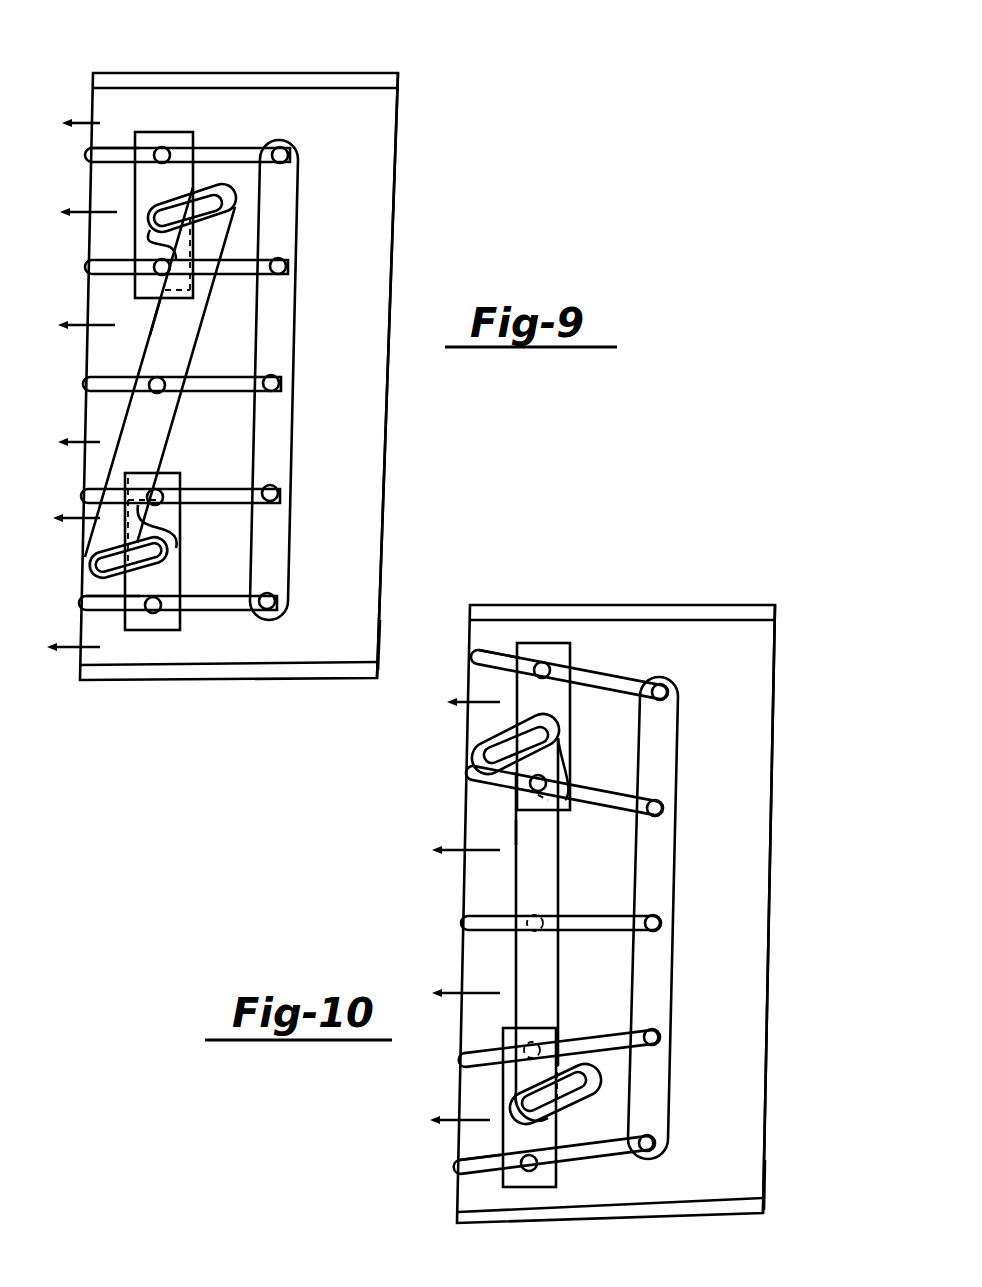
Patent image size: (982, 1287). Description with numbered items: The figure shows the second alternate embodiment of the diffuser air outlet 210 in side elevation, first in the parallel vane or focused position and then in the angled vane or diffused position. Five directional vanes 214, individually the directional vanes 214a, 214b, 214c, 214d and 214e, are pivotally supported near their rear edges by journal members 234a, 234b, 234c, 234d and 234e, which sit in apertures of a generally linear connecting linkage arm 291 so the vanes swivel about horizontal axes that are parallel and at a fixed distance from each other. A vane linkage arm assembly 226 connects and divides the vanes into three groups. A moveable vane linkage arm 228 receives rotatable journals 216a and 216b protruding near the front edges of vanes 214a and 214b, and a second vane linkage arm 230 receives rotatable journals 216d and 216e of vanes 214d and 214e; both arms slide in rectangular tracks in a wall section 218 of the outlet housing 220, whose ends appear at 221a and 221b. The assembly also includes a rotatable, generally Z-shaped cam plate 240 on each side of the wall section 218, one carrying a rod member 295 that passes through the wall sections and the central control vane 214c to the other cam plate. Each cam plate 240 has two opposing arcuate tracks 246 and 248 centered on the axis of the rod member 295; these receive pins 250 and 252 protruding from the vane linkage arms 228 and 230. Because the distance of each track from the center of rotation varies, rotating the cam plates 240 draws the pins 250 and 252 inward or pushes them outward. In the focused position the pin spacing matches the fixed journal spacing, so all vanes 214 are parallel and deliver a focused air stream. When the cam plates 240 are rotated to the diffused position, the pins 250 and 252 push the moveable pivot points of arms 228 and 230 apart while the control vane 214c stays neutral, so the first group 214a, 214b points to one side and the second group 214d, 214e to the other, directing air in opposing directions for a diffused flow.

In FIG. 9, the diffuser air outlet 210 is at (247, 363).
In FIG. 10, the diffuser air outlet 210 is at (586, 875).
In FIG. 9, the directional vanes 214 is at (193, 340).
In FIG. 10, the directional vanes 214 is at (568, 888).
In FIG. 9, the directional vane 214a is at (196, 127).
In FIG. 10, the directional vane 214a is at (576, 663).
In FIG. 9, the directional vane 214b is at (186, 296).
In FIG. 10, the directional vane 214b is at (564, 784).
In FIG. 9, the directional vane 214c is at (182, 406).
In FIG. 10, the directional vane 214c is at (560, 902).
In FIG. 9, the directional vane 214d is at (180, 517).
In FIG. 10, the directional vane 214d is at (558, 1029).
In FIG. 9, the directional vane 214e is at (178, 628).
In FIG. 10, the directional vane 214e is at (553, 1172).
In FIG. 9, the rotatable journal 216a is at (177, 128).
In FIG. 10, the rotatable journal 216a is at (567, 610).
In FIG. 9, the rotatable journal 216b is at (96, 258).
In FIG. 10, the rotatable journal 216b is at (582, 762).
In FIG. 9, the rotatable journal 216d is at (196, 469).
In FIG. 10, the rotatable journal 216d is at (573, 1014).
In FIG. 9, the rotatable journal 216e is at (154, 633).
In FIG. 10, the rotatable journal 216e is at (515, 1205).
In FIG. 9, the wall section 218 is at (422, 375).
In FIG. 10, the wall section 218 is at (776, 909).
In FIG. 9, the outlet housing 220 is at (283, 376).
In FIG. 10, the outlet housing 220 is at (642, 914).
In FIG. 9, the first plate end 221a is at (192, 685).
In FIG. 10, the first plate end 221a is at (554, 1214).
In FIG. 9, the second plate end 221b is at (419, 647).
In FIG. 10, the second plate end 221b is at (775, 1201).
In FIG. 9, the vane linkage arm assembly 226 is at (91, 330).
In FIG. 10, the vane linkage arm assembly 226 is at (465, 823).
In FIG. 9, the vane linkage arm 228 is at (82, 168).
In FIG. 10, the vane linkage arm 228 is at (504, 626).
In FIG. 9, the vane linkage arm 230 is at (75, 595).
In FIG. 10, the vane linkage arm 230 is at (438, 1147).
In FIG. 9, the journal member 234a is at (331, 136).
In FIG. 10, the journal member 234a is at (709, 705).
In FIG. 9, the journal member 234b is at (328, 250).
In FIG. 10, the journal member 234b is at (704, 809).
In FIG. 9, the journal member 234c is at (317, 383).
In FIG. 10, the journal member 234c is at (699, 923).
In FIG. 9, the journal member 234d is at (318, 493).
In FIG. 10, the journal member 234d is at (698, 1037).
In FIG. 9, the journal member 234e is at (316, 600).
In FIG. 10, the journal member 234e is at (692, 1141).
In FIG. 9, the cam plate 240 is at (128, 372).
In FIG. 10, the cam plate 240 is at (478, 915).
In FIG. 9, the track 246 is at (254, 214).
In FIG. 10, the track 246 is at (485, 757).
In FIG. 9, the track 248 is at (94, 541).
In FIG. 10, the track 248 is at (559, 1104).
In FIG. 9, the pin 250 is at (122, 219).
In FIG. 10, the pin 250 is at (552, 733).
In FIG. 9, the pin 252 is at (168, 563).
In FIG. 10, the pin 252 is at (493, 1091).
In FIG. 9, the connecting linkage arm 291 is at (320, 364).
In FIG. 10, the connecting linkage arm 291 is at (697, 918).
In FIG. 9, the rod member 295 is at (183, 392).
In FIG. 10, the rod member 295 is at (567, 945).